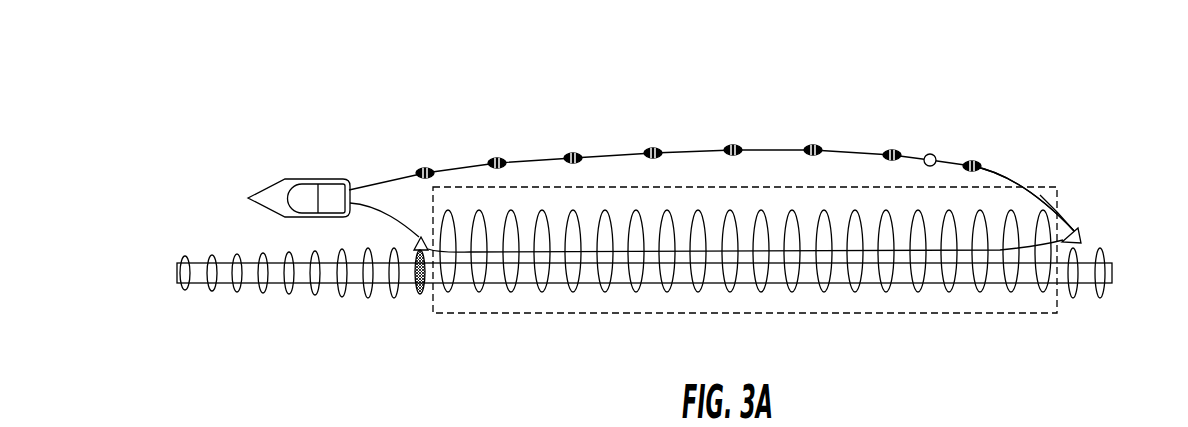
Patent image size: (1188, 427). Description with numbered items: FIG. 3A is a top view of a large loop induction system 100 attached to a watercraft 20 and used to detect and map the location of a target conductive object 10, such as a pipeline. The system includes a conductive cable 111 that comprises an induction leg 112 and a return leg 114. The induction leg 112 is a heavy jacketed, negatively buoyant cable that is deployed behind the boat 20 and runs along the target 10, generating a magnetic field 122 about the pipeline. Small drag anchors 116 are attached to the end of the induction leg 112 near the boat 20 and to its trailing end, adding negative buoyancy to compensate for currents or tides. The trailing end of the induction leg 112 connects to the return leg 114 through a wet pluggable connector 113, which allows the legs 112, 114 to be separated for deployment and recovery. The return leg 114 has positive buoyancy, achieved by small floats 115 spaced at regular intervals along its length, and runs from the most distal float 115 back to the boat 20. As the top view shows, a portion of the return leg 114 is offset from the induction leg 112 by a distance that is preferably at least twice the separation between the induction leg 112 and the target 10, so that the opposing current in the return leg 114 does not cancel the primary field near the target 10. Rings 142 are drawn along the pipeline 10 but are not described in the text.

The large loop induction system 100 is at (942, 80).
The target conductive object 10 is at (1113, 272).
The watercraft 20 is at (275, 178).
The conductive cable 111 is at (1061, 204).
The induction leg 112 is at (1003, 172).
The connector 113 is at (930, 153).
The return leg 114 is at (353, 178).
The float 115 is at (425, 167).
The drag anchor 116 is at (413, 297).
The magnetic field 122 is at (706, 314).
The pipe collars / rings 142 is at (290, 297).